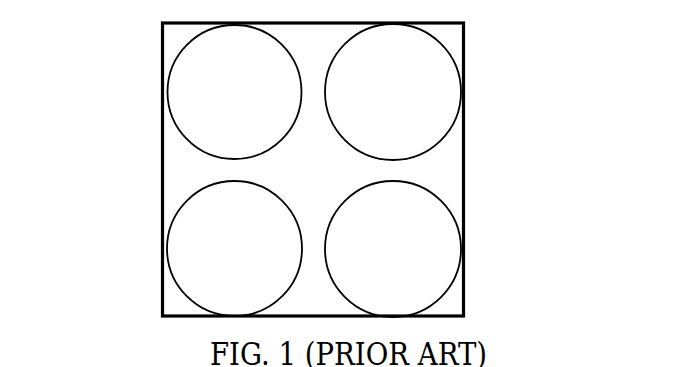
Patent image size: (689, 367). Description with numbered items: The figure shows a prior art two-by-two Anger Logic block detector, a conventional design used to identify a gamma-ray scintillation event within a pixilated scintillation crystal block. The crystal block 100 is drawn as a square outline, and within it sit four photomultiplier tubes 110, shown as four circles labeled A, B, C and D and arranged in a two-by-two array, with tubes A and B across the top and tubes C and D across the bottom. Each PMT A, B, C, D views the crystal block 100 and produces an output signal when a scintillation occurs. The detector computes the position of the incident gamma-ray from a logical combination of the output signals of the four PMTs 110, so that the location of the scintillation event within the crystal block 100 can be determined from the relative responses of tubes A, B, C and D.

The crystal block 100 is at (295, 170).
The photomultiplier tubes 110 is at (447, 92).
The photomultiplier tube A is at (235, 92).
The photomultiplier tube B is at (464, 80).
The photomultiplier tube C is at (234, 248).
The photomultiplier tube D is at (393, 249).